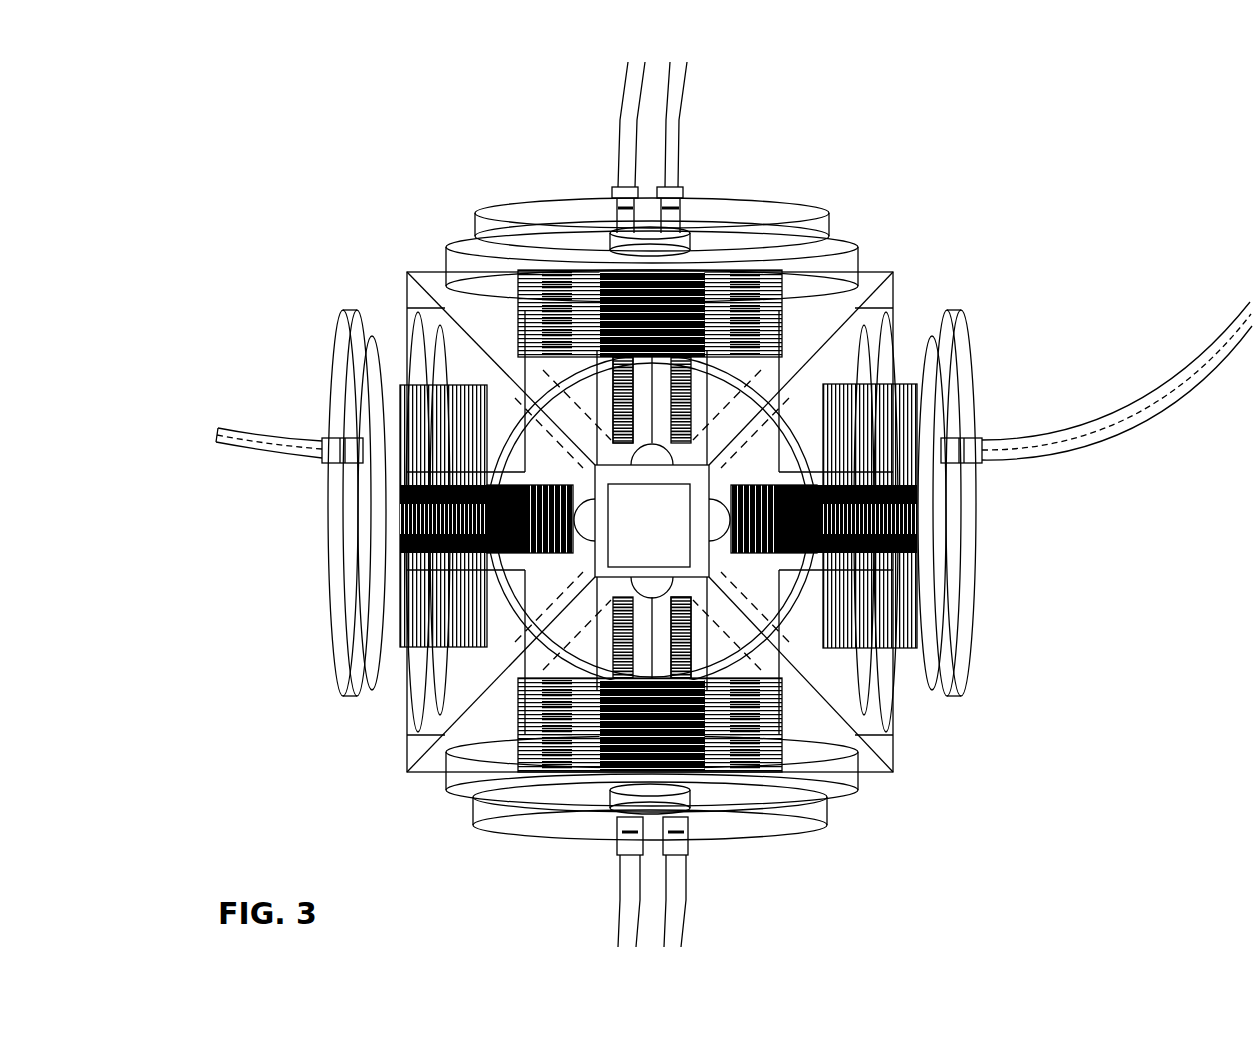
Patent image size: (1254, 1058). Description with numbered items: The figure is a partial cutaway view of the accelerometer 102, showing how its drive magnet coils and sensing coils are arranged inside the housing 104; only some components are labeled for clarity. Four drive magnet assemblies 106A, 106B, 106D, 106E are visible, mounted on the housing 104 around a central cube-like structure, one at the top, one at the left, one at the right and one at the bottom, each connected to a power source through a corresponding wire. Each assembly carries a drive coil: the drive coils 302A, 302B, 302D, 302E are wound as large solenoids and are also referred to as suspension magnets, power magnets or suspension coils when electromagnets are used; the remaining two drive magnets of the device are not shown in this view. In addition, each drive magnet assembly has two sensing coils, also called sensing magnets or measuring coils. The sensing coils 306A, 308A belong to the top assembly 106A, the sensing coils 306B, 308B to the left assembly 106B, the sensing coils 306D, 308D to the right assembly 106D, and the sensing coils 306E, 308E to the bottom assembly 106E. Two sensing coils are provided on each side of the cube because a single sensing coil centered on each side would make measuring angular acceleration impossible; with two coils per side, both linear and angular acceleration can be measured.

The accelerometer 102 is at (177, 125).
The housing 104 is at (882, 285).
The drive magnet assembly 106A is at (858, 233).
The drive magnet assembly 106B is at (379, 733).
The drive magnet assembly 106D is at (935, 688).
The drive magnet assembly 106E is at (838, 817).
The drive coil 302A is at (514, 278).
The drive coil 302B is at (403, 648).
The drive coil 302D is at (921, 587).
The drive coil 302E is at (786, 706).
The sensing coil 306A is at (690, 387).
The sensing coil 306B is at (532, 484).
The sensing coil 306D is at (773, 483).
The sensing coil 306E is at (612, 613).
The sensing coil 308A is at (611, 387).
The sensing coil 308B is at (530, 519).
The sensing coil 308D is at (774, 519).
The sensing coil 308E is at (690, 613).